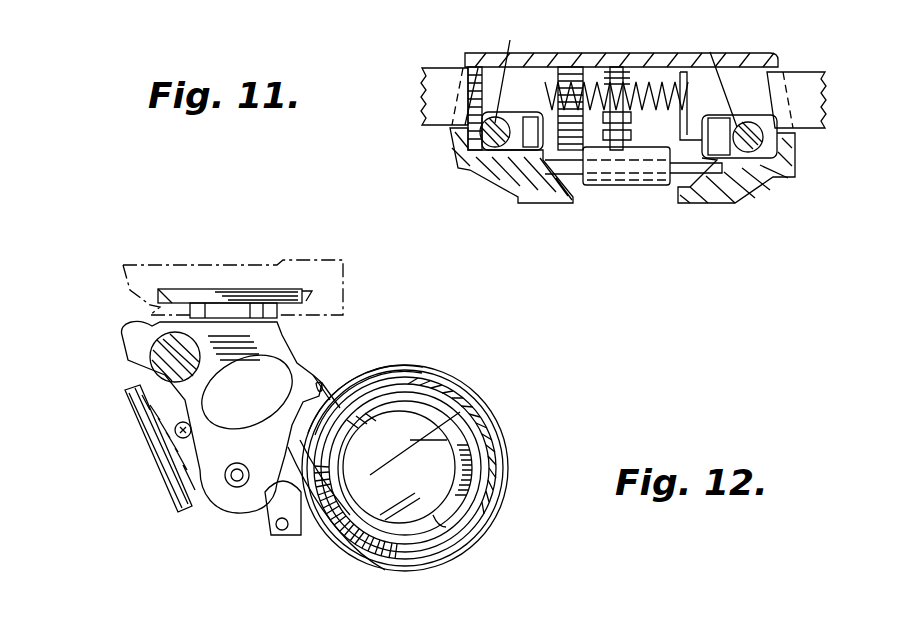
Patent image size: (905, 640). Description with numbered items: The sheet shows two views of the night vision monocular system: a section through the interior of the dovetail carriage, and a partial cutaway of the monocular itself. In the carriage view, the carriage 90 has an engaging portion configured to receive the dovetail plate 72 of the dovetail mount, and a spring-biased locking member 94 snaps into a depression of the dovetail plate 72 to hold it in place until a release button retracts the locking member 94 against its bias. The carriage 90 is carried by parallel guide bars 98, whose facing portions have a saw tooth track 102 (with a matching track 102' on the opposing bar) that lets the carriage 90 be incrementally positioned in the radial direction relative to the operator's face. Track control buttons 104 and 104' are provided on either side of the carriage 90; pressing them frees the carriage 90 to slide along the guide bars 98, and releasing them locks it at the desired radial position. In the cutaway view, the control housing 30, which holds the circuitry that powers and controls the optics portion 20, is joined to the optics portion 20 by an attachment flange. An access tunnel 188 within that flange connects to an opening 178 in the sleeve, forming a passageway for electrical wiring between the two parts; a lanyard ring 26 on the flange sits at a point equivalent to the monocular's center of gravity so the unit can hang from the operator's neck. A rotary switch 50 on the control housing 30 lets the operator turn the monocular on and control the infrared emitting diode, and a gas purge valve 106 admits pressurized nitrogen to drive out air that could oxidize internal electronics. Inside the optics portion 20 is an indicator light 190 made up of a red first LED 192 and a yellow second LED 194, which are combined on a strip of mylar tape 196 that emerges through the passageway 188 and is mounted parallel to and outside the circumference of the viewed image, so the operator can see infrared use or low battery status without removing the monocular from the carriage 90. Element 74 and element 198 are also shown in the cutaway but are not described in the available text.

In FIG. 12, the optics portion 20 is at (488, 386).
In FIG. 12, the lanyard ring 26 is at (270, 527).
In FIG. 12, the control housing 30 is at (206, 514).
In FIG. 12, the rotary switch 50 is at (133, 338).
In FIG. 12, the dovetail plate 72 is at (223, 297).
In FIG. 12, the shaft 74 is at (130, 408).
In FIG. 11, the carriage 90 is at (724, 43).
In FIG. 11, the spring-biased locking member 94 is at (612, 186).
In FIG. 11, the guide bar 98 is at (505, 50).
In FIG. 11, the saw tooth track 102 is at (501, 171).
In FIG. 11, the bracket 102' is at (736, 191).
In FIG. 11, the track control button 104 is at (409, 80).
In FIG. 11, the shaft 104' is at (812, 138).
In FIG. 12, the gas purge valve 106 is at (338, 335).
In FIG. 12, the opening 178 is at (360, 460).
In FIG. 12, the access tunnel 188 is at (327, 512).
In FIG. 12, the indicator light 190 is at (437, 393).
In FIG. 12, the first light-emitting diode 192 is at (438, 437).
In FIG. 12, the second LED 194 is at (500, 500).
In FIG. 12, the mylar tape 196 is at (380, 403).
In FIG. 12, the lug 198 is at (437, 513).